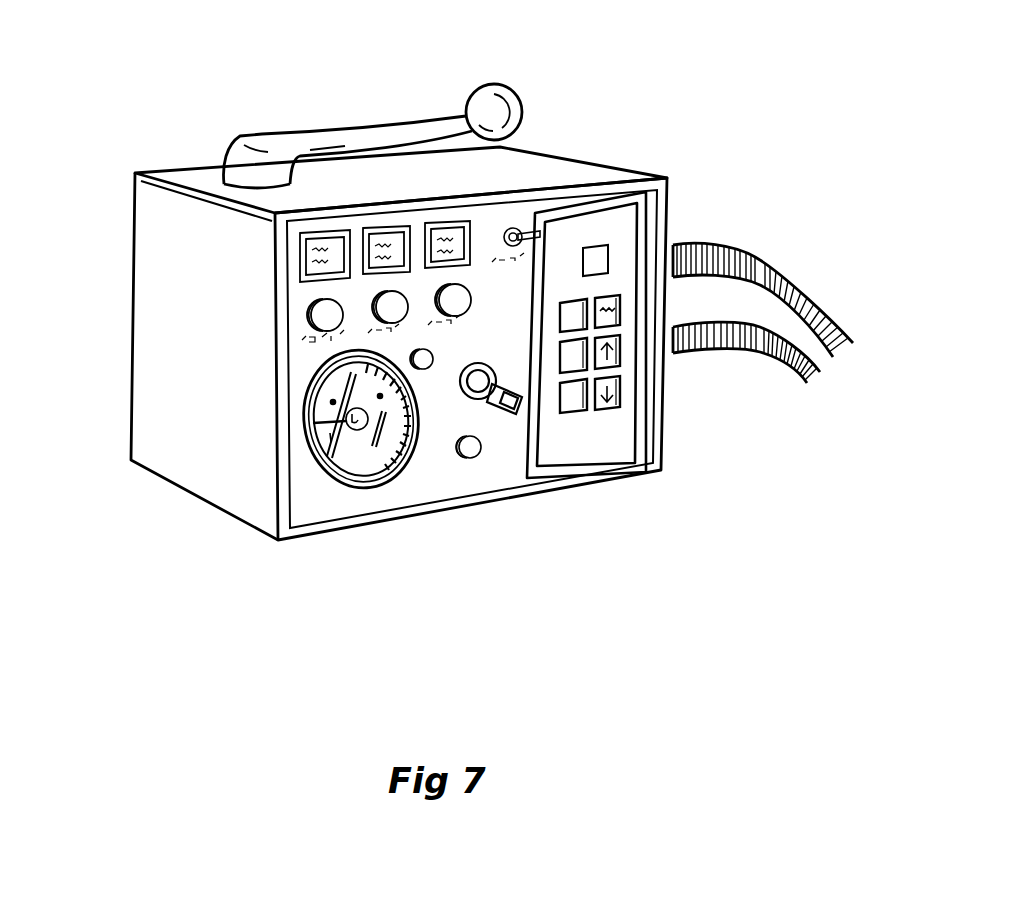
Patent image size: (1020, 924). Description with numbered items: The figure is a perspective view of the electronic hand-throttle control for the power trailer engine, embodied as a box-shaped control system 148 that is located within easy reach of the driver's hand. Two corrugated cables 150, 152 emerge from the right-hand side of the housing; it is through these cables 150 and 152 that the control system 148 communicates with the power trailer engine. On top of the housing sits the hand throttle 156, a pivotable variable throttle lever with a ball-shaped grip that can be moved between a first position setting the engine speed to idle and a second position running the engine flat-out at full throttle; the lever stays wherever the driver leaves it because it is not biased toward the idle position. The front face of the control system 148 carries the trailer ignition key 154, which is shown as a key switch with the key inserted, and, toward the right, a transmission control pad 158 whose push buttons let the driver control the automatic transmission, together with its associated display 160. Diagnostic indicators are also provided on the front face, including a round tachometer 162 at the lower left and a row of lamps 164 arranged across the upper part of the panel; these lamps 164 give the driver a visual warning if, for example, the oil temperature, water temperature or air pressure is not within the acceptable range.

The control system 148 is at (584, 142).
The cable 150 is at (725, 247).
The cable 152 is at (752, 360).
The trailer ignition key 154 is at (497, 413).
The hand throttle 156 is at (497, 102).
The transmission control pad 158 is at (575, 400).
The display 160 is at (598, 258).
The tachometer 162 is at (359, 449).
The lamps 164 is at (453, 290).